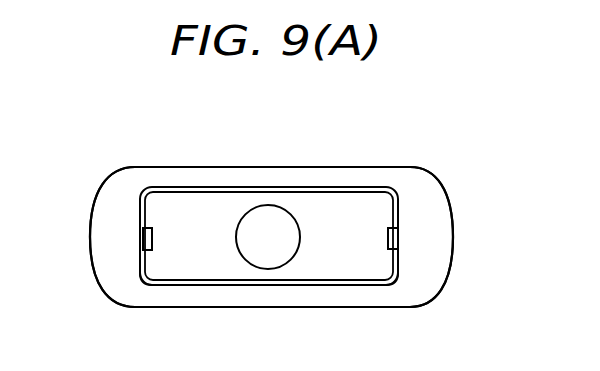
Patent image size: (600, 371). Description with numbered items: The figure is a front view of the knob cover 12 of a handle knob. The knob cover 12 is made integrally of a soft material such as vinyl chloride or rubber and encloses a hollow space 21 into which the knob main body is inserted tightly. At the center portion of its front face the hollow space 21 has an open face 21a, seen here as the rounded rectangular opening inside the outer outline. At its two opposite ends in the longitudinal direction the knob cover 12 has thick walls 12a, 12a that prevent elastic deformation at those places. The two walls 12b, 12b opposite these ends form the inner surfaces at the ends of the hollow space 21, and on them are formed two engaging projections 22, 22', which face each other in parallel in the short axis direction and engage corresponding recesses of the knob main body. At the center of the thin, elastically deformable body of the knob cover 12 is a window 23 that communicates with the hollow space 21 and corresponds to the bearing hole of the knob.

The knob cover 12 is at (369, 167).
The thick wall 12a is at (98, 230).
The wall 12b is at (143, 268).
The hollow space 21 is at (229, 211).
The open face 21a is at (189, 194).
The engaging projection 22 is at (172, 236).
The engaging projection 22' is at (361, 236).
The window 23 is at (270, 270).